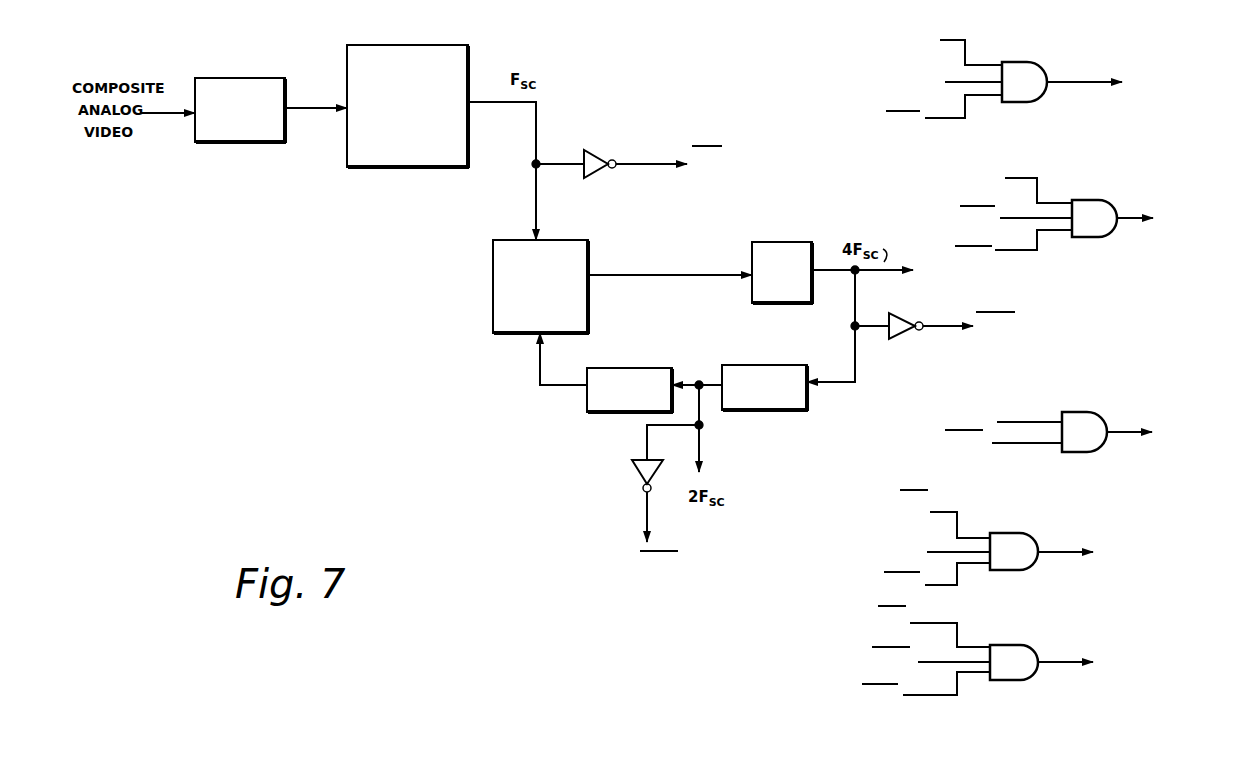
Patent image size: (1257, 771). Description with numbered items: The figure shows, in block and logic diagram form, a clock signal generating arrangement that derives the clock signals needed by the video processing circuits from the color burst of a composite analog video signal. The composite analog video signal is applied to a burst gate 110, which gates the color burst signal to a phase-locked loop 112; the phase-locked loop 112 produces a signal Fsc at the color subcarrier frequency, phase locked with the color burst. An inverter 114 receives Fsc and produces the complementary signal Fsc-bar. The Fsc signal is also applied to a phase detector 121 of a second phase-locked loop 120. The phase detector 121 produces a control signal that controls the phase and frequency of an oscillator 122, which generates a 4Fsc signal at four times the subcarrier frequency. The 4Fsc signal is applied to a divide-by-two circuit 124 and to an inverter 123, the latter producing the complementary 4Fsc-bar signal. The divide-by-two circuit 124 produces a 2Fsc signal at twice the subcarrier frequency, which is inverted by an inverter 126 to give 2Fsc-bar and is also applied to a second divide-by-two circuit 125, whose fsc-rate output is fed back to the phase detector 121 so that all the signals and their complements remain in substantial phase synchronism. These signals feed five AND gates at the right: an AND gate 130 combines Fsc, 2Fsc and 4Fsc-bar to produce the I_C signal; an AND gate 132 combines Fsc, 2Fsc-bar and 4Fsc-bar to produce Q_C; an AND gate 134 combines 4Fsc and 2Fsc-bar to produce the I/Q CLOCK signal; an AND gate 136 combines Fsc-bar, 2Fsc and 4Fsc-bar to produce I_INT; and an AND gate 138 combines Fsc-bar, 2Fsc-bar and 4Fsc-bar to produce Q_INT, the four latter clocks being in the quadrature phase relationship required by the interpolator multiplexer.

The burst gate 110 is at (251, 78).
The phase-locked loop 112 is at (422, 45).
The inverter 114 is at (597, 150).
The second phase-locked loop 120 is at (696, 322).
The phase detector 121 is at (568, 240).
The oscillator 122 is at (790, 242).
The inverter 123 is at (900, 313).
The divide-by-two circuit 124 is at (756, 365).
The second divide-by-two circuit 125 is at (606, 368).
The inverter 126 is at (633, 468).
The AND gate 130 is at (1013, 62).
The AND gate 132 is at (1082, 200).
The AND gate 134 is at (1078, 412).
The AND gate 136 is at (1007, 533).
The AND gate 138 is at (1007, 645).